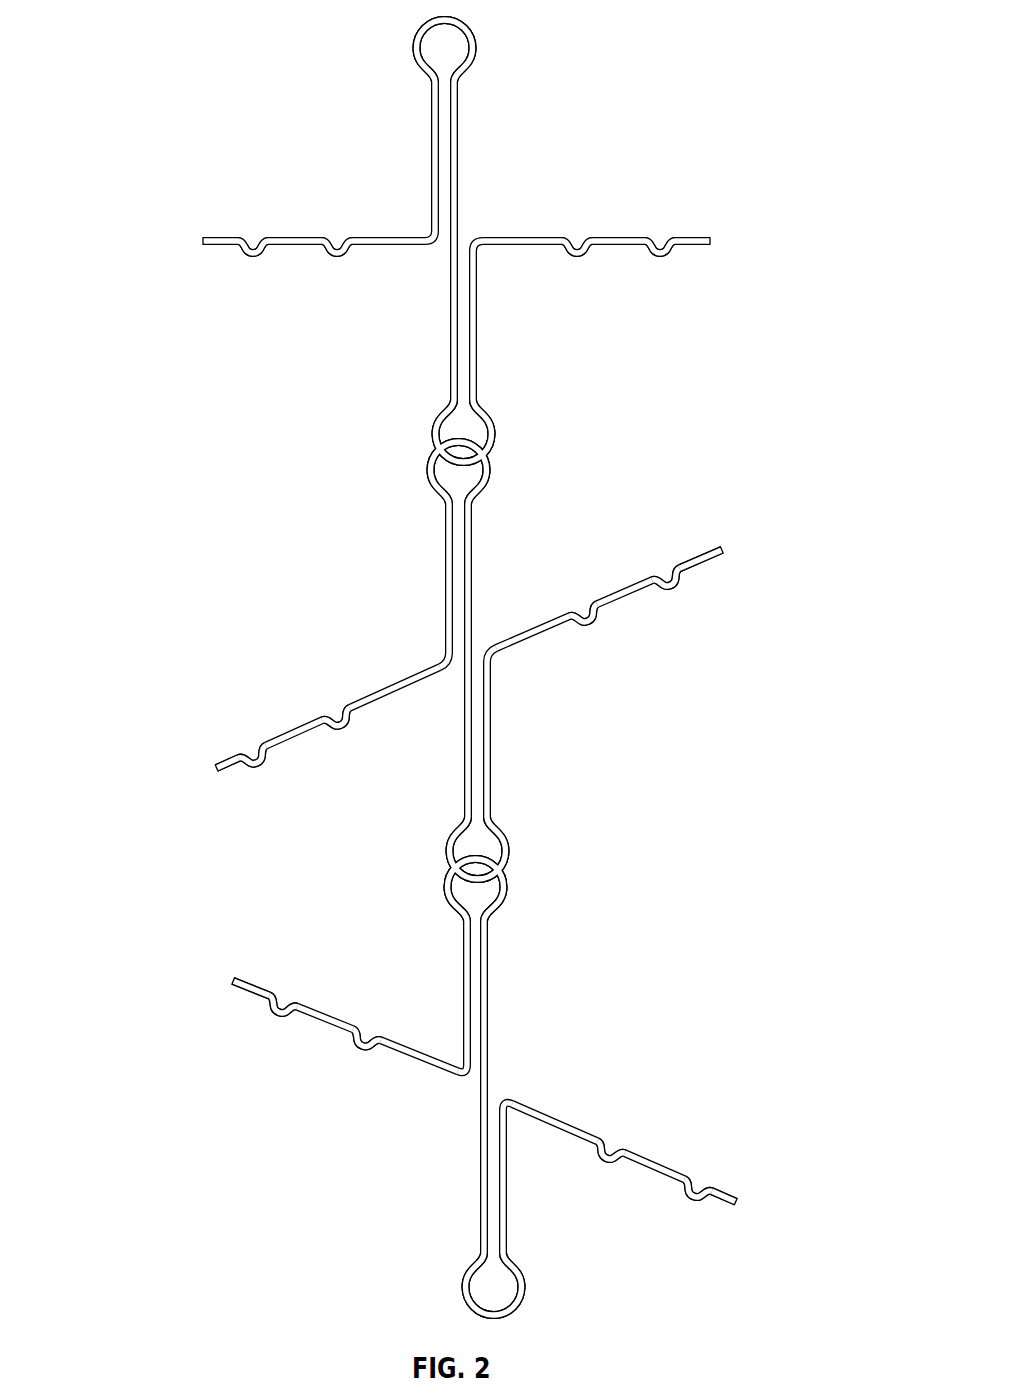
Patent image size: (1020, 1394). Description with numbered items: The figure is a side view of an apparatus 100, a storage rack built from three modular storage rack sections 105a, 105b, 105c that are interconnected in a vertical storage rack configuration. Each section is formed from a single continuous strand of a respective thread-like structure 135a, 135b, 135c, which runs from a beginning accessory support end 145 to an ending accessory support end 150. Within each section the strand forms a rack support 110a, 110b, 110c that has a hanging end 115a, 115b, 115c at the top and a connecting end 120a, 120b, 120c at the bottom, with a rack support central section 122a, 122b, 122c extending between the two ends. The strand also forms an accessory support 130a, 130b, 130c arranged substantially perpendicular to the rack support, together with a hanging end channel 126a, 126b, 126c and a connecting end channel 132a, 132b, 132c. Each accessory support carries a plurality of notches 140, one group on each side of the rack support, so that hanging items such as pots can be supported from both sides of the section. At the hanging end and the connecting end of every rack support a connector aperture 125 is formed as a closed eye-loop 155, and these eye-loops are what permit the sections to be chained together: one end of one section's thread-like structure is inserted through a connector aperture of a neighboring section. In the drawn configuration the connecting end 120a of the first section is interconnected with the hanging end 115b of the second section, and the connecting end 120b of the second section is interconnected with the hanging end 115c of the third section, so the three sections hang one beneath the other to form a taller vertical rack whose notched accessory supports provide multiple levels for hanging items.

The apparatus 100 is at (435, 666).
The storage rack section 105a is at (488, 241).
The storage rack section 105b is at (506, 660).
The storage rack section 105c is at (521, 1087).
The rack support 110a is at (471, 241).
The rack support 110b is at (496, 660).
The rack support 110c is at (509, 1087).
The hanging end 115a is at (461, 80).
The hanging end 115b is at (474, 502).
The hanging end 115c is at (491, 933).
The connecting end 120a is at (485, 407).
The connecting end 120b is at (497, 818).
The connecting end 120c is at (513, 1268).
The rack support central section 122a is at (462, 172).
The rack support central section 122b is at (480, 583).
The rack support central section 122c is at (497, 990).
The connector aperture 125 is at (477, 37).
The hanging end channel 126a is at (444, 252).
The hanging end channel 126b is at (452, 686).
The hanging end channel 126c is at (471, 1090).
The accessory support 130a is at (430, 240).
The accessory support 130b is at (446, 661).
The accessory support 130c is at (458, 1082).
The connecting end channel 132a is at (621, 298).
The connecting end channel 132b is at (638, 683).
The connecting end channel 132c is at (656, 1148).
The thread-like structure 135a is at (703, 238).
The thread-like structure 135b is at (716, 564).
The thread-like structure 135c is at (741, 1196).
The notch 140 is at (252, 257).
The beginning accessory support end 145 is at (215, 238).
The ending accessory support end 150 is at (706, 246).
The eye-loop 155 is at (447, 53).